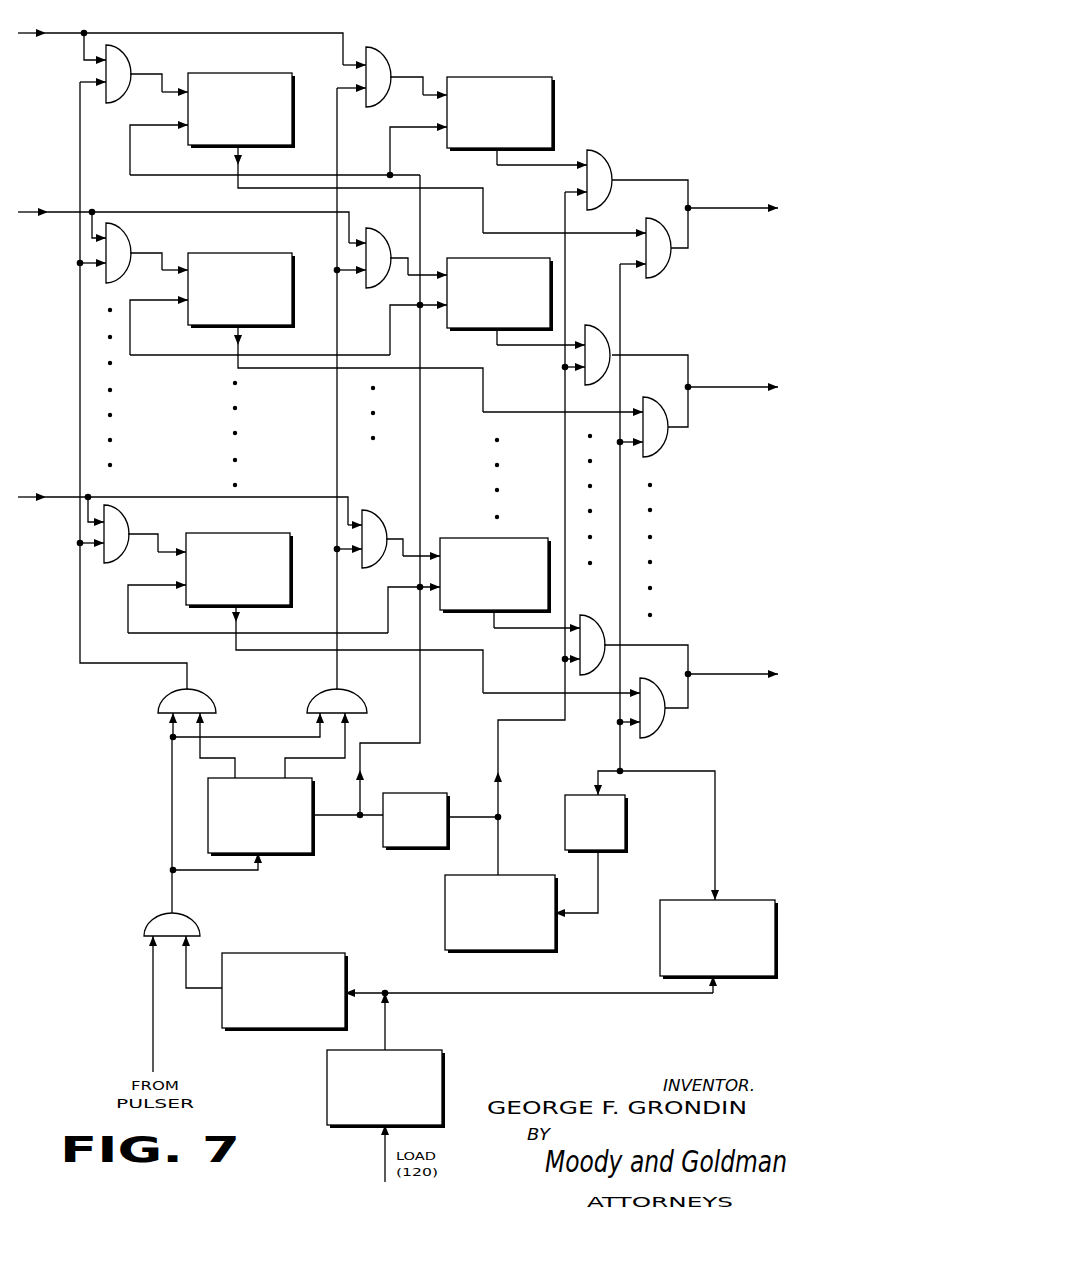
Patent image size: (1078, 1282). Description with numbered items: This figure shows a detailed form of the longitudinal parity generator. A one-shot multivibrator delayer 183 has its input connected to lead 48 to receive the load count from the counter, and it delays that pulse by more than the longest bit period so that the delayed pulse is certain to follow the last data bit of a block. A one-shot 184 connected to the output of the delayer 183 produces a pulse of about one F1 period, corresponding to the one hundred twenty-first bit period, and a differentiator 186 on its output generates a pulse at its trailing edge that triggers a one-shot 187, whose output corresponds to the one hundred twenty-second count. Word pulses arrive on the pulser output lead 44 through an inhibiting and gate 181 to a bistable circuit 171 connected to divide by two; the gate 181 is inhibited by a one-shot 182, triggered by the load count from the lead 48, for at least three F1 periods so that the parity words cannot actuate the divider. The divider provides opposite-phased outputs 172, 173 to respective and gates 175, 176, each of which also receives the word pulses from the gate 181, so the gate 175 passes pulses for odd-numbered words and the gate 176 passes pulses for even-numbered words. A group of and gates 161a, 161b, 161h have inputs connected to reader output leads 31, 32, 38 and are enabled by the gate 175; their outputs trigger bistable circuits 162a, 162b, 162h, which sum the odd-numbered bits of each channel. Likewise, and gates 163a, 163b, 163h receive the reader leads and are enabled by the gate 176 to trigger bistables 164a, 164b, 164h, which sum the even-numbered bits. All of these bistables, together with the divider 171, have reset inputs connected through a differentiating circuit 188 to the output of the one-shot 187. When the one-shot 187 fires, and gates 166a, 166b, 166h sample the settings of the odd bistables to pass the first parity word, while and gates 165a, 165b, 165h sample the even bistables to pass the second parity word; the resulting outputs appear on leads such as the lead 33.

The reader output lead 31 is at (73, 33).
The reader output lead 32 is at (63, 212).
The reader output lead 33 is at (710, 385).
The reader output lead 38 is at (62, 497).
The pulser output lead 44 is at (153, 1033).
The lead 48 is at (380, 1165).
The and gate 161a is at (128, 63).
The and gate 161b is at (128, 243).
The and gate 161h is at (123, 522).
The bistable circuit 162a is at (209, 136).
The bistable circuit 162b is at (209, 316).
The bistable circuit 162h is at (207, 598).
The and gate 163a is at (388, 65).
The and gate 163b is at (392, 218).
The and gate 163h is at (383, 495).
The bistable circuit 164a is at (472, 141).
The bistable circuit 164b is at (470, 320).
The bistable circuit 164h is at (466, 601).
The and gate 165a is at (608, 167).
The and gate 165b is at (602, 310).
The and gate 165h is at (602, 598).
The and gate 166a is at (660, 272).
The and gate 166b is at (658, 448).
The and gate 166h is at (663, 727).
The bistable circuit 171 is at (240, 845).
The output 172 is at (241, 750).
The output 173 is at (288, 772).
The and gate 175 is at (157, 703).
The and gate 176 is at (310, 697).
The inhibiting and gate 181 is at (150, 917).
The one-shot 182 is at (263, 1022).
The one-shot multivibrator delayer 183 is at (365, 1121).
The one-shot 184 is at (697, 972).
The differentiator 186 is at (577, 844).
The one-shot 187 is at (480, 946).
The differentiating circuit 188 is at (397, 843).